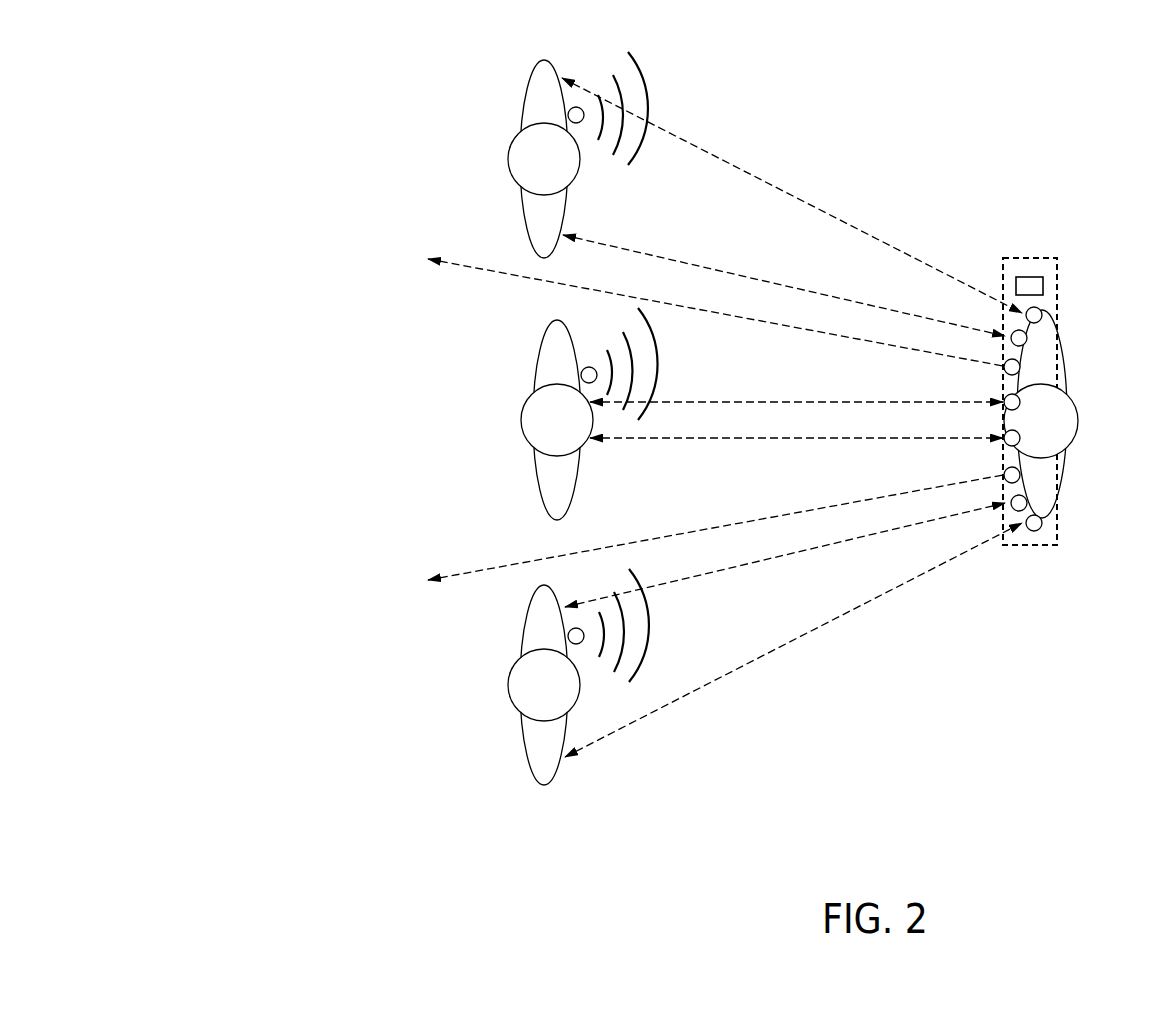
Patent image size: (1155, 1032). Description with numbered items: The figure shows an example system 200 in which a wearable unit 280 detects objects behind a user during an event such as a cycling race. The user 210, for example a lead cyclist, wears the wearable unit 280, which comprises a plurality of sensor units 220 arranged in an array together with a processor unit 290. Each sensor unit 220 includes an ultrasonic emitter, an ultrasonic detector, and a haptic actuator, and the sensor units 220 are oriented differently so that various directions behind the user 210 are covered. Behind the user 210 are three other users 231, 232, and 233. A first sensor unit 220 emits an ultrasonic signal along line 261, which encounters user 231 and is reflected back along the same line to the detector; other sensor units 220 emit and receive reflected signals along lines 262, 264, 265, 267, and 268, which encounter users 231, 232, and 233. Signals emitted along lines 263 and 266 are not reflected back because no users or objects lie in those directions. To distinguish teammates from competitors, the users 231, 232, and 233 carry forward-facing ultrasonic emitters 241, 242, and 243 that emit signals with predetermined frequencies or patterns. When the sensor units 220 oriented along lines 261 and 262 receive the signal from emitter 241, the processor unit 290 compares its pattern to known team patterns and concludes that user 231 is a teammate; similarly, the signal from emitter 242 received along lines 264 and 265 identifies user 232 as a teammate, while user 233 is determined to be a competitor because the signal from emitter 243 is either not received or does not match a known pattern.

The system 200 is at (85, 42).
The user 210 is at (1078, 405).
The sensor units 220 is at (1025, 402).
The user 231 is at (522, 103).
The user 232 is at (536, 360).
The user 233 is at (522, 626).
The forward-facing ultrasonic emitter 241 is at (568, 115).
The forward-facing ultrasonic emitter 242 is at (582, 377).
The forward-facing ultrasonic emitter 243 is at (568, 637).
The line 261 is at (823, 212).
The line 262 is at (730, 270).
The line 263 is at (697, 312).
The line 264 is at (803, 402).
The line 265 is at (803, 438).
The line 266 is at (722, 525).
The line 267 is at (758, 560).
The line 268 is at (830, 623).
The wearable unit 280 is at (1030, 257).
The processor unit 290 is at (1048, 282).